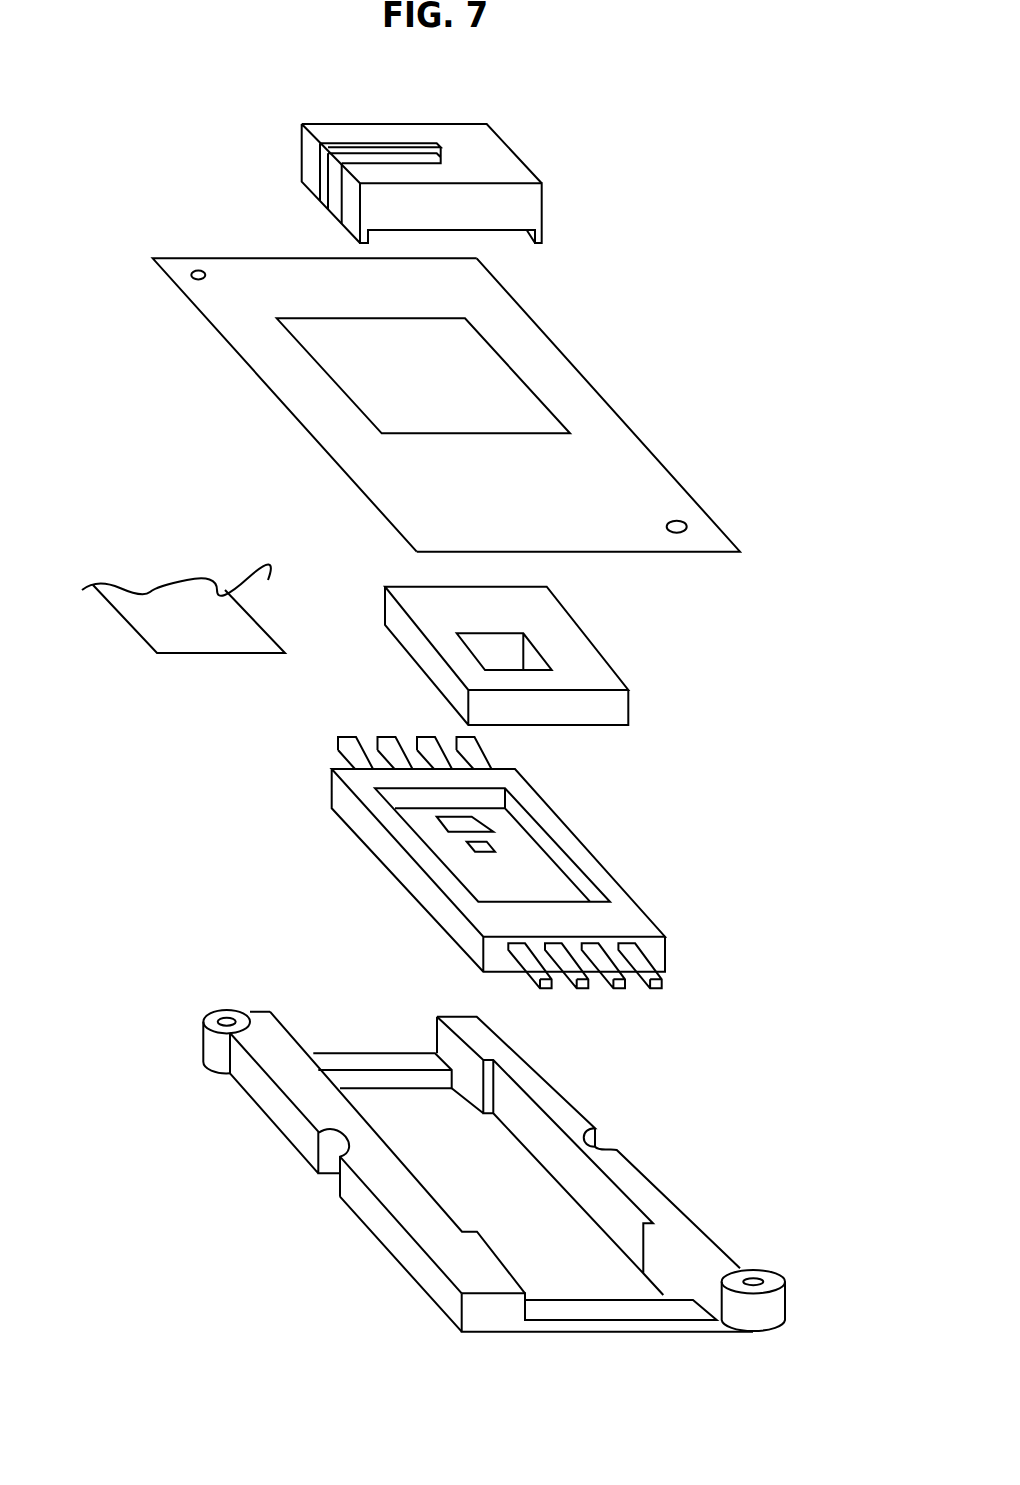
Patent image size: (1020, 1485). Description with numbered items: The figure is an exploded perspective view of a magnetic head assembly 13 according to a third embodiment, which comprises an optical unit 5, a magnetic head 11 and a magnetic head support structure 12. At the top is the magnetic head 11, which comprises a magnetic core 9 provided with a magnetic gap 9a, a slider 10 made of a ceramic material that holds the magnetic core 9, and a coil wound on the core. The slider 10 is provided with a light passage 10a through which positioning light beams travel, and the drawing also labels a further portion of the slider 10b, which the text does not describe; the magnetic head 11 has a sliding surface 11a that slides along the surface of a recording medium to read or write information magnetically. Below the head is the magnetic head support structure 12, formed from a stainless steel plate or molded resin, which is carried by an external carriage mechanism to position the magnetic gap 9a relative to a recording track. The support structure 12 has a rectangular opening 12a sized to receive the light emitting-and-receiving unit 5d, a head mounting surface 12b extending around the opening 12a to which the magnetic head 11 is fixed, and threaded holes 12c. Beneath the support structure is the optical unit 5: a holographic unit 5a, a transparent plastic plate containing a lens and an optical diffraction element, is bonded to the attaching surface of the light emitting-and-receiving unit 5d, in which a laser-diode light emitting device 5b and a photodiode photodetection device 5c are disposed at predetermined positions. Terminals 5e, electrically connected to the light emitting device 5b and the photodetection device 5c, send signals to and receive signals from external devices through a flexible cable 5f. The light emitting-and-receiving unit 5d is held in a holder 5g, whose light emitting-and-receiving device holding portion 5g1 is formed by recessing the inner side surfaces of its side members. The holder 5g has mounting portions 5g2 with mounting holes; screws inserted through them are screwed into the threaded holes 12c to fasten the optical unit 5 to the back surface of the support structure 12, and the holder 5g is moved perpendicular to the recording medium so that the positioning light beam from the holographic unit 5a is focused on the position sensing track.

The optical unit 5 is at (737, 743).
The holographic unit 5a is at (563, 622).
The light emitting device 5b is at (493, 847).
The photodetection device 5c is at (477, 820).
The light emitting-and-receiving unit 5d is at (628, 894).
The terminals 5e is at (348, 735).
The flexible cable 5f is at (256, 620).
The holder 5g is at (648, 1172).
The light emitting-and-receiving device holding portion 5g1 is at (508, 1088).
The mounting portions 5g2 is at (763, 1277).
The magnetic core 9 is at (428, 141).
The magnetic gap 9a is at (392, 142).
The slider 10 is at (525, 180).
The light passage 10a is at (303, 181).
The front face 10b is at (542, 229).
The magnetic head 11 is at (482, 138).
The sliding surface 11a is at (498, 155).
The magnetic head support structure 12 is at (555, 363).
The rectangular opening 12a is at (523, 406).
The head mounting surface 12b is at (390, 343).
The threaded holes 12c is at (198, 271).
The magnetic head assembly 13 is at (643, 140).